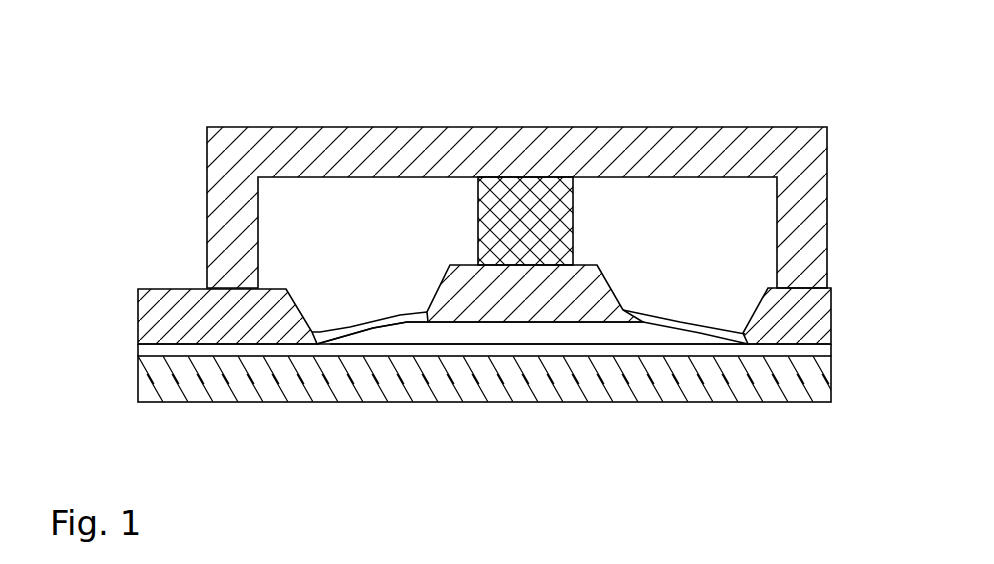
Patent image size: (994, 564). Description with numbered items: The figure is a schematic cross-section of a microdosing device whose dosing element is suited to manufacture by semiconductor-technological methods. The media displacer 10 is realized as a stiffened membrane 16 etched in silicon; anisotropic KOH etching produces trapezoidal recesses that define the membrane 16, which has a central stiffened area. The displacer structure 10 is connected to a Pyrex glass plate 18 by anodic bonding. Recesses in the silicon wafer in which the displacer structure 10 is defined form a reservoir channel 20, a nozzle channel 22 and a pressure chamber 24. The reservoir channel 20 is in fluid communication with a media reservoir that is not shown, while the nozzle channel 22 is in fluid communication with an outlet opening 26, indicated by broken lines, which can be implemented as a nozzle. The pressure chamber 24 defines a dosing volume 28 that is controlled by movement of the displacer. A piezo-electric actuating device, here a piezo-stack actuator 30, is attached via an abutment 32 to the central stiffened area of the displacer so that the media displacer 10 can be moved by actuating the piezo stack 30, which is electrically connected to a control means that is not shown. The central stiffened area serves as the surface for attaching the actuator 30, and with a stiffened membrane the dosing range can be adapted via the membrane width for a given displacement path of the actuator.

The media displacer 10 is at (597, 290).
The membrane 16 is at (668, 318).
The Pyrex glass plate 18 is at (823, 367).
The reservoir channel 20 is at (157, 352).
The nozzle channel 22 is at (778, 348).
The pressure chamber 24 is at (515, 342).
The outlet opening 26 is at (832, 345).
The dosing volume 28 is at (422, 337).
The piezo-stack actuator 30 is at (535, 202).
The abutment 32 is at (463, 148).